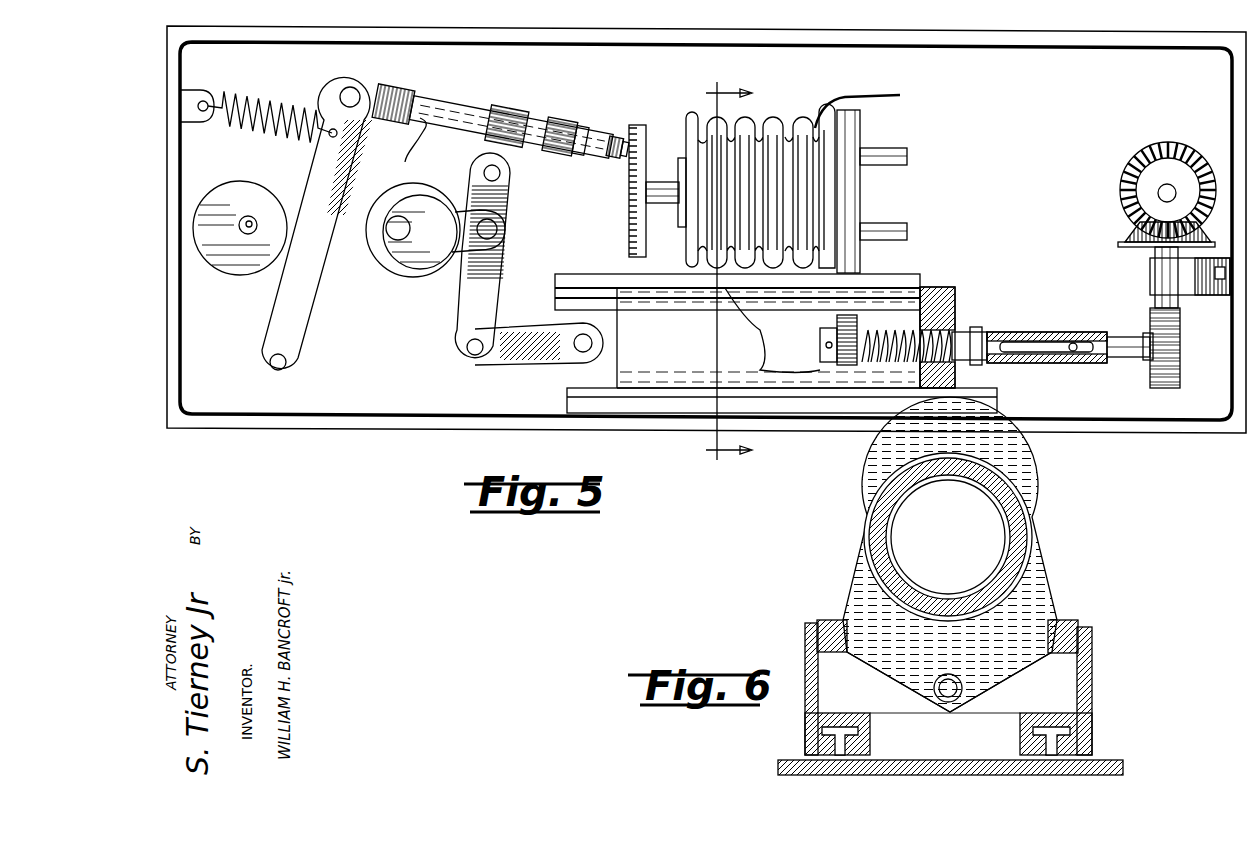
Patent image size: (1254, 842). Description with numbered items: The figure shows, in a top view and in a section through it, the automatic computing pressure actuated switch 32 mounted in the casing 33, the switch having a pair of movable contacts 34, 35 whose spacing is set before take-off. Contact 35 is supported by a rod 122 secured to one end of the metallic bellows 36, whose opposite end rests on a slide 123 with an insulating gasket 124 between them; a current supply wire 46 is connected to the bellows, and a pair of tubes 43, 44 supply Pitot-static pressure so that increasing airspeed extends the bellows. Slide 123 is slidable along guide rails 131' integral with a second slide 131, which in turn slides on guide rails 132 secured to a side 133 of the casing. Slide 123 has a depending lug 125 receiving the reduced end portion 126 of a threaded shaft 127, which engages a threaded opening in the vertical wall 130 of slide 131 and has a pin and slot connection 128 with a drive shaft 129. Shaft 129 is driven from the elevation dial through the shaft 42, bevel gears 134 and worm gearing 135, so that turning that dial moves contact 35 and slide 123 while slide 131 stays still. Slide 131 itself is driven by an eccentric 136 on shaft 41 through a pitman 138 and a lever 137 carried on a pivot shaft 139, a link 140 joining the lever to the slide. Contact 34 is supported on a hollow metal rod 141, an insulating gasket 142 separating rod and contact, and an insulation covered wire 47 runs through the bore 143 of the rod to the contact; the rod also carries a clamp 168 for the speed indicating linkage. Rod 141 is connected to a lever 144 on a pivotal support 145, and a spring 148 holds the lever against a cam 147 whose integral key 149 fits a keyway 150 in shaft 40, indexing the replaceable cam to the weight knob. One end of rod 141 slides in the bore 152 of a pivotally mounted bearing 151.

In FIG. 5, the casing 33 is at (1063, 44).
In FIG. 5, the side of casing 133 is at (481, 433).
In FIG. 6, the side of casing 133 is at (783, 767).
In FIG. 5, the spring 148 is at (280, 104).
In FIG. 5, the lever 144 is at (301, 245).
In FIG. 5, the pivotal support 145 is at (279, 372).
In FIG. 5, the cam 147 is at (257, 228).
In FIG. 5, the shaft 40 is at (255, 222).
In FIG. 5, the keyway 150 is at (242, 222).
In FIG. 5, the key 149 is at (258, 227).
In FIG. 5, the pitman 138 is at (430, 229).
In FIG. 5, the eccentric 136 is at (428, 200).
In FIG. 5, the shaft 41 is at (410, 230).
In FIG. 5, the lever 137 is at (513, 268).
In FIG. 5, the pivot shaft 139 is at (490, 170).
In FIG. 5, the link 140 is at (520, 365).
In FIG. 5, the hollow metal rod 141 is at (501, 136).
In FIG. 5, the bore 143 is at (462, 114).
In FIG. 5, the clamp 168 is at (507, 126).
In FIG. 5, the pivotally mounted bearing 151 is at (560, 136).
In FIG. 5, the bore 152 is at (580, 141).
In FIG. 5, the insulating gasket 142 is at (615, 147).
In FIG. 5, the movable contact 34 is at (624, 149).
In FIG. 5, the insulation covered wire 47 is at (404, 160).
In FIG. 5, the movable contact 35 is at (640, 126).
In FIG. 5, the automatic computing pressure actuated switch 32 is at (649, 125).
In FIG. 5, the rod 122 is at (664, 205).
In FIG. 5, the metallic bellows 36 is at (780, 126).
In FIG. 6, the metallic bellows 36 is at (1000, 484).
In FIG. 5, the insulating gasket 124 is at (838, 193).
In FIG. 5, the tube 43 is at (880, 150).
In FIG. 5, the tube 44 is at (876, 230).
In FIG. 5, the current supply wire 46 is at (886, 96).
In FIG. 5, the slide 123 is at (584, 272).
In FIG. 6, the slide 123 is at (1056, 614).
In FIG. 5, the second slide 131 is at (768, 337).
In FIG. 6, the second slide 131 is at (969, 689).
In FIG. 5, the vertical wall 130 is at (938, 288).
In FIG. 6, the vertical wall 130 is at (985, 706).
In FIG. 5, the reduced end portion 126 is at (835, 335).
In FIG. 6, the reduced end portion 126 is at (952, 678).
In FIG. 5, the depending lug 125 is at (860, 326).
In FIG. 6, the depending lug 125 is at (918, 690).
In FIG. 5, the threaded shaft 127 is at (962, 330).
In FIG. 5, the pin and slot connection 128 is at (1073, 343).
In FIG. 5, the drive shaft 129 is at (1120, 337).
In FIG. 5, the worm gearing 135 is at (1182, 355).
In FIG. 5, the bevel gears 134 is at (1146, 225).
In FIG. 5, the shaft 42 is at (1168, 190).
In FIG. 6, the guide rails 131' is at (960, 621).
In FIG. 6, the guide rails 132 is at (820, 738).